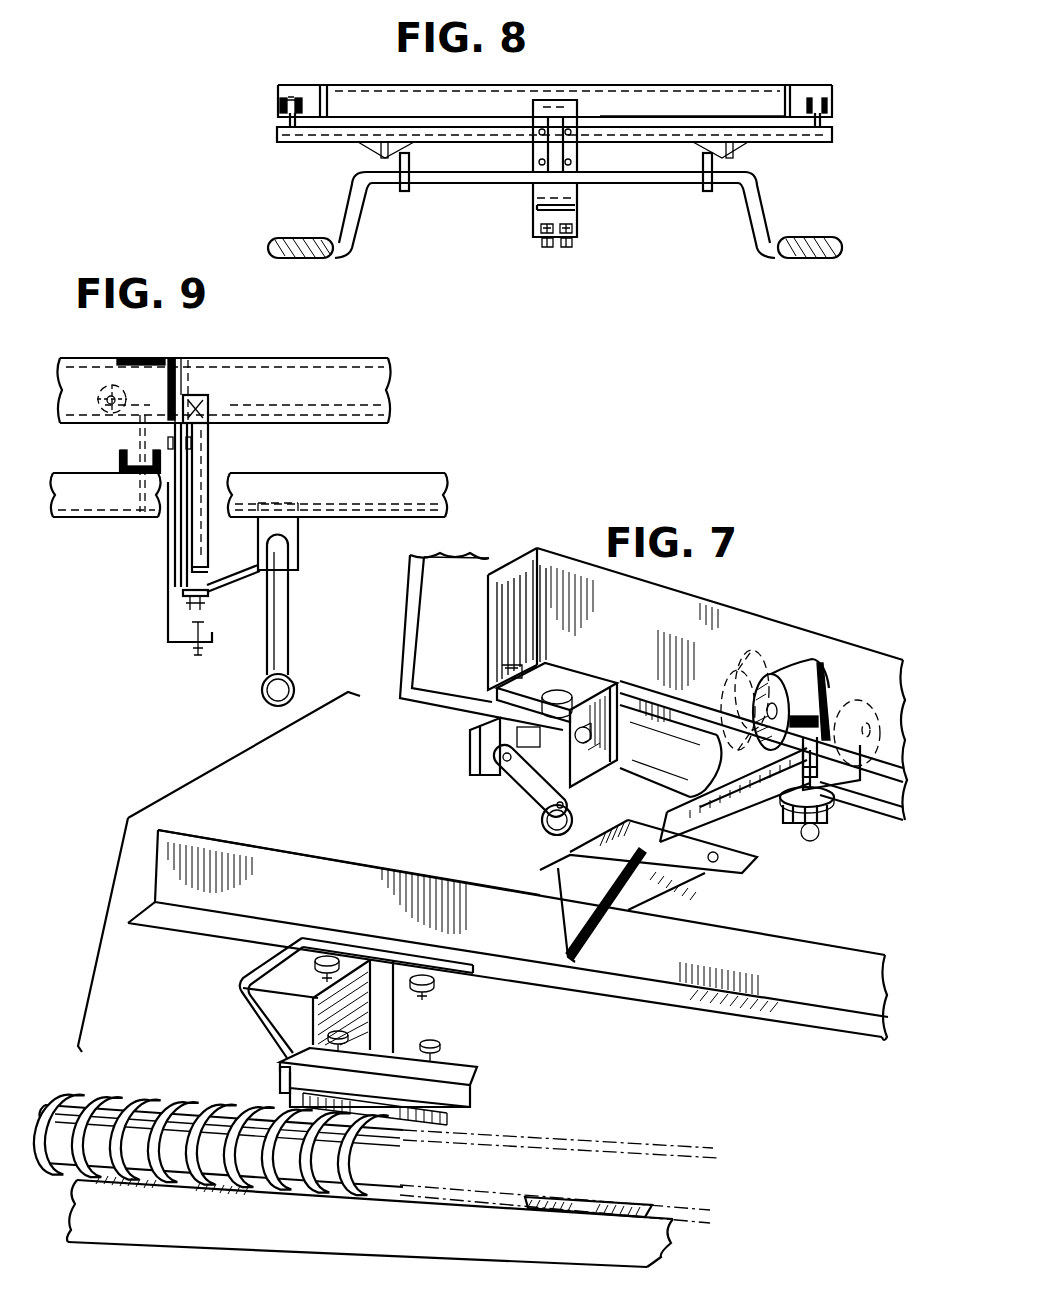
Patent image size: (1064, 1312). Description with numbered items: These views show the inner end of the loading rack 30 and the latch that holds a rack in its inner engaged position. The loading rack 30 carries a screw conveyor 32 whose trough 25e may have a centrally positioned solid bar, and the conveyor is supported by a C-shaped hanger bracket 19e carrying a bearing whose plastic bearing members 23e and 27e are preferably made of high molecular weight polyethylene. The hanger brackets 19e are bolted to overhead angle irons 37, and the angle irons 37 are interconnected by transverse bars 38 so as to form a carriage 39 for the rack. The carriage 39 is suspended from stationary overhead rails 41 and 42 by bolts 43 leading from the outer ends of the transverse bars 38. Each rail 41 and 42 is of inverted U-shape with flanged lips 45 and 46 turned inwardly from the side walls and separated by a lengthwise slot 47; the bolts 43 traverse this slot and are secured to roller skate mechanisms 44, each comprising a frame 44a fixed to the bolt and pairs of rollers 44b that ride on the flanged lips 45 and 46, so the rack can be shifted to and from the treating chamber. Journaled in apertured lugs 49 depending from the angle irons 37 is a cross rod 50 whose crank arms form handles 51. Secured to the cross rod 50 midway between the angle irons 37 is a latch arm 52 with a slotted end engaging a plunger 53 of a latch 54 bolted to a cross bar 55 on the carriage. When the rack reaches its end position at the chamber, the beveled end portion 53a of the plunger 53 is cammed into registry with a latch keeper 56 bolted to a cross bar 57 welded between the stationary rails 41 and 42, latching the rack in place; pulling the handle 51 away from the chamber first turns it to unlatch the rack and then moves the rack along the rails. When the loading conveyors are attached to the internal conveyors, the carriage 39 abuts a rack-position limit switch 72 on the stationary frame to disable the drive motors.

In FIG. 7, the hanger bracket 19e is at (387, 1030).
In FIG. 7, the bearing member 23e is at (453, 1117).
In FIG. 7, the trough 25e is at (645, 1246).
In FIG. 7, the bearing member 27e is at (172, 1182).
In FIG. 7, the loading rack 30 is at (128, 818).
In FIG. 7, the screw conveyor 32 is at (588, 1220).
In FIG. 8, the angle iron 37 is at (372, 151).
In FIG. 9, the angle iron 37 is at (248, 495).
In FIG. 7, the angle iron 37 is at (508, 935).
In FIG. 8, the transverse bar 38 is at (445, 133).
In FIG. 7, the transverse bar 38 is at (768, 832).
In FIG. 9, the carriage 39 is at (321, 346).
In FIG. 7, the carriage 39 is at (291, 840).
In FIG. 8, the stationary overhead rail 41 is at (278, 88).
In FIG. 9, the stationary overhead rail 41 is at (380, 396).
In FIG. 8, the stationary overhead rail 42 is at (834, 97).
In FIG. 7, the stationary overhead rail 42 is at (697, 684).
In FIG. 8, the bolt 43 is at (283, 122).
In FIG. 9, the bolt 43 is at (137, 435).
In FIG. 7, the bolt 43 is at (819, 835).
In FIG. 8, the roller skate mechanism 44 is at (293, 85).
In FIG. 9, the roller skate mechanism 44 is at (132, 376).
In FIG. 7, the roller skate mechanism 44 is at (795, 680).
In FIG. 7, the frame 44a is at (828, 700).
In FIG. 7, the rollers 44b is at (740, 668).
In FIG. 7, the flanged lip 45 is at (497, 694).
In FIG. 7, the flanged lip 46 is at (547, 665).
In FIG. 7, the slot 47 is at (516, 660).
In FIG. 8, the apertured lug 49 is at (404, 191).
In FIG. 9, the apertured lug 49 is at (298, 542).
In FIG. 8, the cross rod 50 is at (636, 181).
In FIG. 9, the cross rod 50 is at (290, 605).
In FIG. 8, the handle 51 is at (323, 250).
In FIG. 9, the handle 51 is at (293, 677).
In FIG. 8, the latch arm 52 is at (542, 193).
In FIG. 9, the latch arm 52 is at (240, 578).
In FIG. 8, the plunger 53 is at (538, 210).
In FIG. 9, the plunger 53 is at (200, 600).
In FIG. 9, the beveled end portion 53a is at (190, 358).
In FIG. 9, the latch 54 is at (220, 453).
In FIG. 9, the cross bar 55 is at (170, 525).
In FIG. 9, the latch keeper 56 is at (210, 407).
In FIG. 8, the cross bar 57 is at (705, 100).
In FIG. 9, the cross bar 57 is at (170, 358).
In FIG. 7, the rack-position limit switch 72 is at (490, 782).